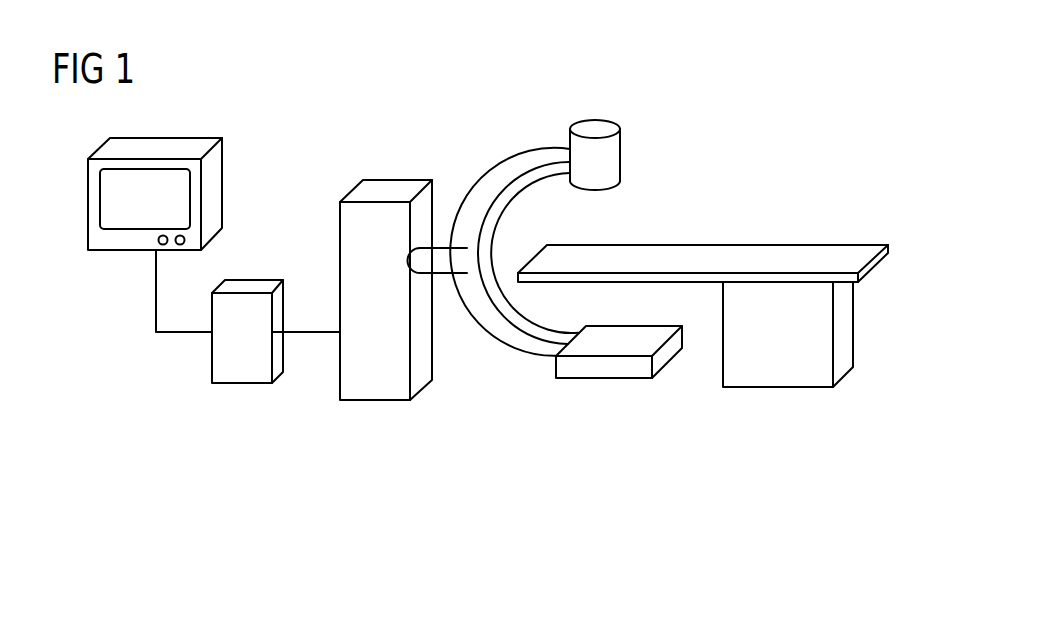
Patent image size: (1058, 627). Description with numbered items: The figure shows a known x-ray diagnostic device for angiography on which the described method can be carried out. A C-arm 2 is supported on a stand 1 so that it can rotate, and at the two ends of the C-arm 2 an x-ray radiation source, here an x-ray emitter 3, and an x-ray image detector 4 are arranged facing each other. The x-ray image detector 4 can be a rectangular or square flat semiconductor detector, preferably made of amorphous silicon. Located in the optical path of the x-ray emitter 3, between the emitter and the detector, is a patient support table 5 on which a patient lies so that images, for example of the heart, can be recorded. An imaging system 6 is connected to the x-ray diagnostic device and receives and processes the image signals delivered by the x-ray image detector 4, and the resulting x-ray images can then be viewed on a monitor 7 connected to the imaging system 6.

The stand 1 is at (375, 388).
The C-arm 2 is at (495, 200).
The x-ray emitter 3 is at (608, 162).
The x-ray image detector 4 is at (602, 365).
The patient support table 5 is at (777, 372).
The imaging system 6 is at (242, 372).
The monitor 7 is at (175, 147).